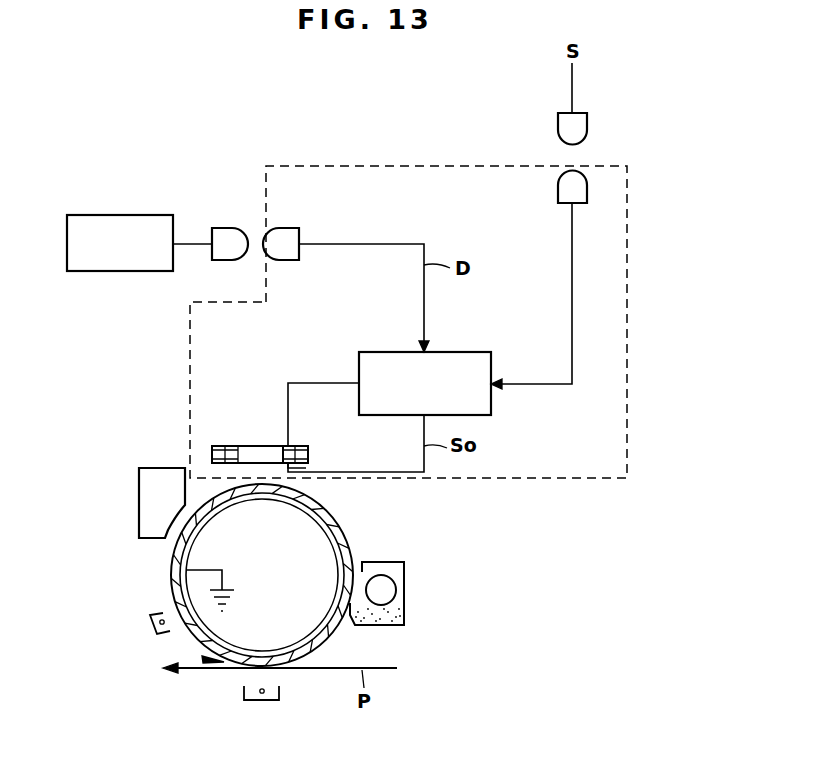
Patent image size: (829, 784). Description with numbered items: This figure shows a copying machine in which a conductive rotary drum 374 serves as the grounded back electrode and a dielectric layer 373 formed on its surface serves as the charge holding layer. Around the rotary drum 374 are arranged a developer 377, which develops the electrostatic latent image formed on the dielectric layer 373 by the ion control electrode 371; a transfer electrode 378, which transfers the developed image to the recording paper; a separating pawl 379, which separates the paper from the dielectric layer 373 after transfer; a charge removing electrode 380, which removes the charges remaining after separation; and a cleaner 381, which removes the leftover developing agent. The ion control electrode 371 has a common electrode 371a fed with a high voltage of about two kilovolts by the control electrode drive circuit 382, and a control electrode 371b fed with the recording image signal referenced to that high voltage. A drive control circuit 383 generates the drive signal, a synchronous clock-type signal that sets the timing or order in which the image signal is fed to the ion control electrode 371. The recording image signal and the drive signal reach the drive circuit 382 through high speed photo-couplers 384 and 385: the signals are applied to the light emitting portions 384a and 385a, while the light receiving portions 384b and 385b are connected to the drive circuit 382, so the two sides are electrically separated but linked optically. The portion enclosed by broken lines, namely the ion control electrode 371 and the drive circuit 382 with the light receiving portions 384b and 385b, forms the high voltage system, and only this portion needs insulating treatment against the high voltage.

The ion control electrode 371 is at (233, 446).
The common electrode 371a is at (300, 446).
The control electrode 371b is at (306, 468).
The dielectric layer 373 is at (341, 530).
The rotary drum 374 is at (338, 552).
The developer 377 is at (404, 596).
The transfer electrode 378 is at (263, 702).
The separating pawl 379 is at (208, 665).
The charge removing electrode 380 is at (150, 626).
The cleaner 381 is at (139, 503).
The control electrode drive circuit 382 is at (459, 352).
The drive control circuit 383 is at (125, 215).
The photo-coupler 384 is at (580, 159).
The light emitting portion 384a is at (558, 130).
The light receiving portion 384b is at (558, 192).
The photo-coupler 385 is at (257, 238).
The light emitting portion 385a is at (223, 260).
The light receiving portion 385b is at (289, 260).